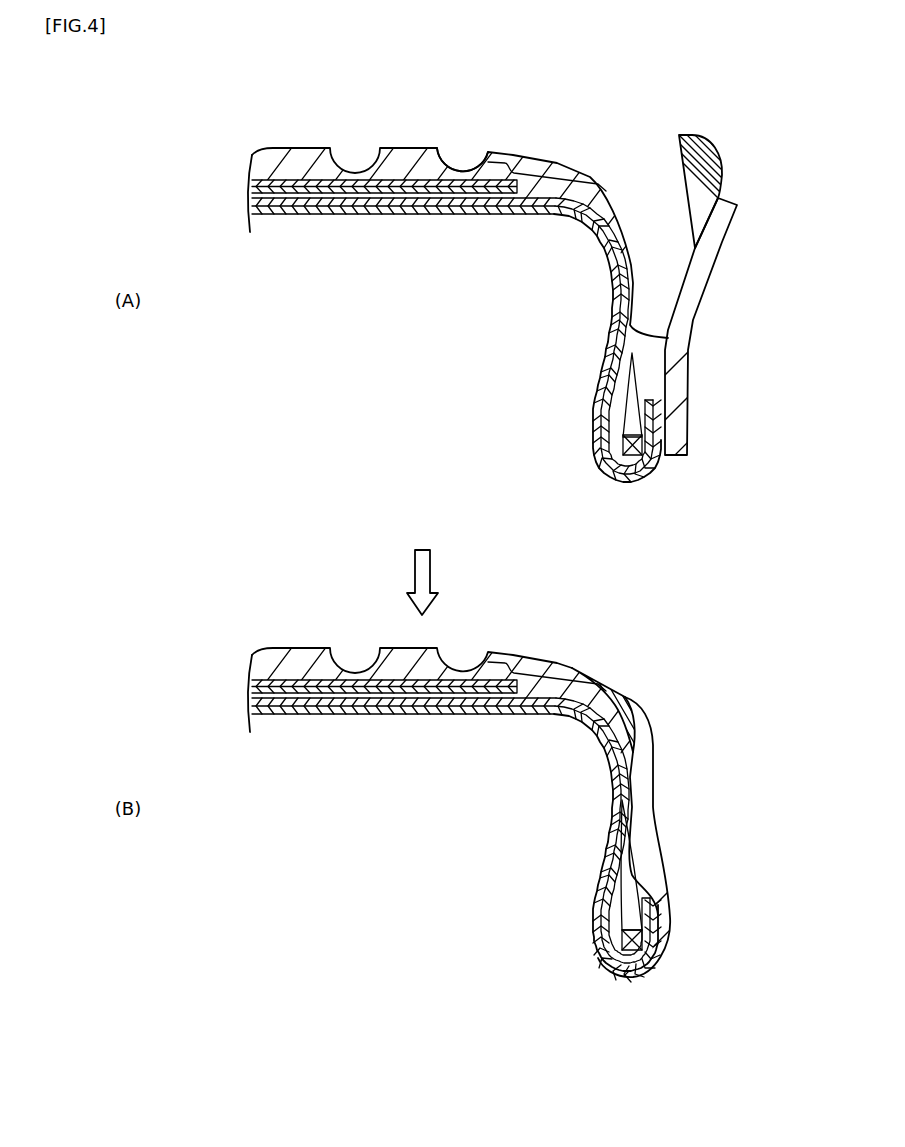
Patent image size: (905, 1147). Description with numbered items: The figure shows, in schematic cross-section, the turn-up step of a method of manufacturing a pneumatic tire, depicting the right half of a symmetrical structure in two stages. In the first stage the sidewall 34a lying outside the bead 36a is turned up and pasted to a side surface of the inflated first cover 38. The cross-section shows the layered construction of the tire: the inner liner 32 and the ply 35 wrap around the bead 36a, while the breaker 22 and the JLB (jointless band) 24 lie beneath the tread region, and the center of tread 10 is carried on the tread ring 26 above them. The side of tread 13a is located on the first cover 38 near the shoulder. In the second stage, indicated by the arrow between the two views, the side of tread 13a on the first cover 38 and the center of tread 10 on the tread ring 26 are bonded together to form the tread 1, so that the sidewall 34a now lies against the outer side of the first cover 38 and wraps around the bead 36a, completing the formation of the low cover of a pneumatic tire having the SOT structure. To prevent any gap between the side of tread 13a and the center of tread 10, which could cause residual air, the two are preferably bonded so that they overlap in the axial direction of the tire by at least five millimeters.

The tread 1 is at (543, 652).
The center of tread 10 is at (524, 153).
The side of tread 13a is at (708, 157).
The breaker 22 is at (326, 194).
The JLB (jointless band) 24 is at (252, 183).
The tread ring 26 is at (412, 148).
The inner liner 32 is at (408, 212).
The ply 35 is at (483, 202).
The sidewall 34a is at (697, 280).
The bead 36a is at (624, 445).
The first cover 38 is at (598, 360).